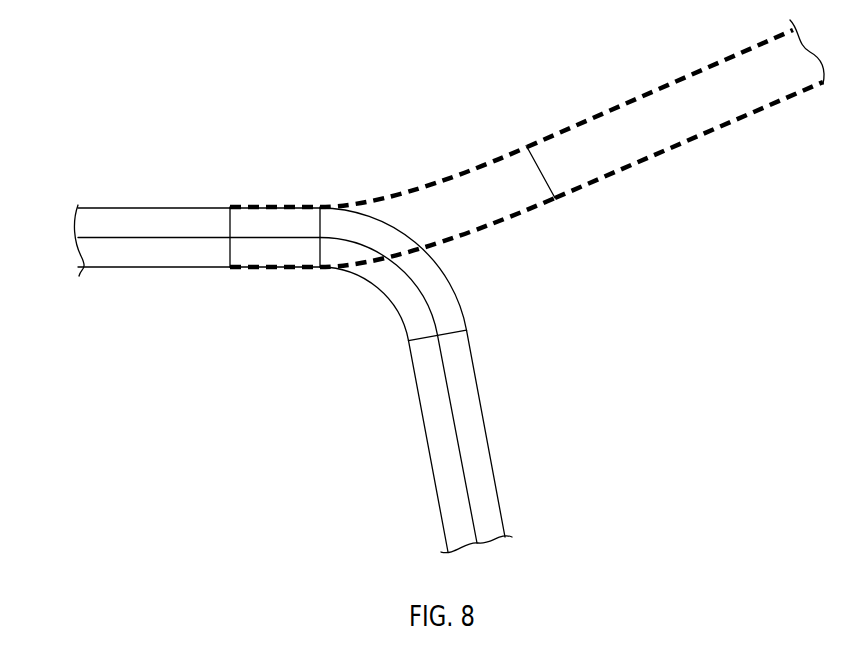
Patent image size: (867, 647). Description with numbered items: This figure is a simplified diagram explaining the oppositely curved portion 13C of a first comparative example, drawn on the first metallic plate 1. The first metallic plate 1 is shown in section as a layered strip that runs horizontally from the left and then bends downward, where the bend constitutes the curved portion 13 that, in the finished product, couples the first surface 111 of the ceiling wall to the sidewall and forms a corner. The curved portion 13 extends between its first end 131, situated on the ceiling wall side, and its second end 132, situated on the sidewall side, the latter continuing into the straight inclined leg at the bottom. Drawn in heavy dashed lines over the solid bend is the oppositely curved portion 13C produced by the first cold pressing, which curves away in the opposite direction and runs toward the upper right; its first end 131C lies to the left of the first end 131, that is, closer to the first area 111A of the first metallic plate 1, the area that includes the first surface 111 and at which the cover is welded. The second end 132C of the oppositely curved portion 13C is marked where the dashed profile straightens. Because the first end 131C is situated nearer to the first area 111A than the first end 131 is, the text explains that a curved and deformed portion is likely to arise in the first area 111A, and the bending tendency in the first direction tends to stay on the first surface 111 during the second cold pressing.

The first metallic plate 1 is at (93, 208).
The first surface 111 is at (110, 238).
The first area 111A is at (139, 238).
The curved portion 13 is at (453, 285).
The oppositely curved portion 13C is at (418, 186).
The first end 131 is at (320, 205).
The first end 131C is at (231, 205).
The second end 132 is at (467, 330).
The second end 132C is at (528, 146).